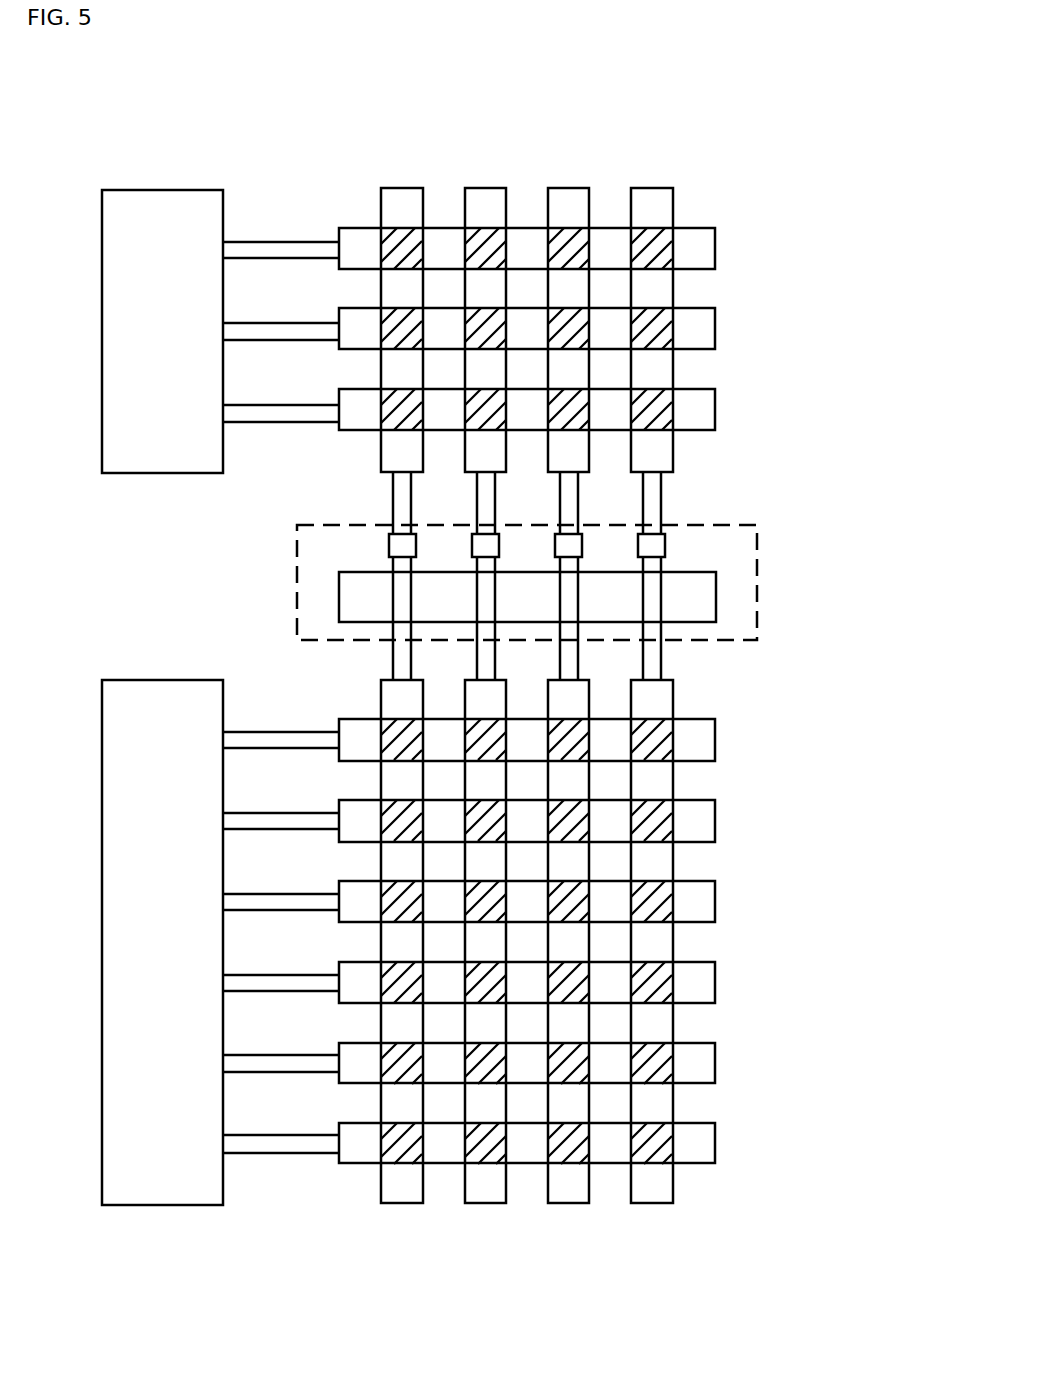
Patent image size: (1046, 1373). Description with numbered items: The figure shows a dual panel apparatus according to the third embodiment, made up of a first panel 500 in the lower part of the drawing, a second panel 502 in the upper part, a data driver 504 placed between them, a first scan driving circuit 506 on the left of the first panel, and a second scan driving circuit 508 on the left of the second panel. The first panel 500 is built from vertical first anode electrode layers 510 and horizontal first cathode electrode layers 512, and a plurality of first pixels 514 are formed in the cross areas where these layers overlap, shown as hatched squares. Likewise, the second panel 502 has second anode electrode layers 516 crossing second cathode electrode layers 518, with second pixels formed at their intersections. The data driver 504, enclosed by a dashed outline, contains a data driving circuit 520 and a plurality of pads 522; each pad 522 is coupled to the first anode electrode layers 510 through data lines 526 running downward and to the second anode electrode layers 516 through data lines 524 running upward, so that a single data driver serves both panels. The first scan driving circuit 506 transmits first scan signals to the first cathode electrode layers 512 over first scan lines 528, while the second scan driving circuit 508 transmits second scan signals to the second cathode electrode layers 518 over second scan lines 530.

The first panel 500 is at (770, 710).
The second panel 502 is at (714, 207).
The data driver 504 is at (765, 508).
The first scan driving circuit 506 is at (160, 1205).
The second scan driving circuit 508 is at (160, 190).
The first anode electrode layers 510 is at (673, 1223).
The first cathode electrode layers 512 is at (729, 717).
The first pixels 514 is at (670, 1149).
The second anode electrode layers 516 is at (673, 167).
The second cathode electrode layers 518 is at (738, 227).
The data driving circuit 520 is at (716, 592).
The pads 522 is at (655, 543).
The data lines 524 is at (653, 478).
The data lines 526 is at (655, 650).
The first scan lines 528 is at (300, 1153).
The second scan lines 530 is at (273, 240).